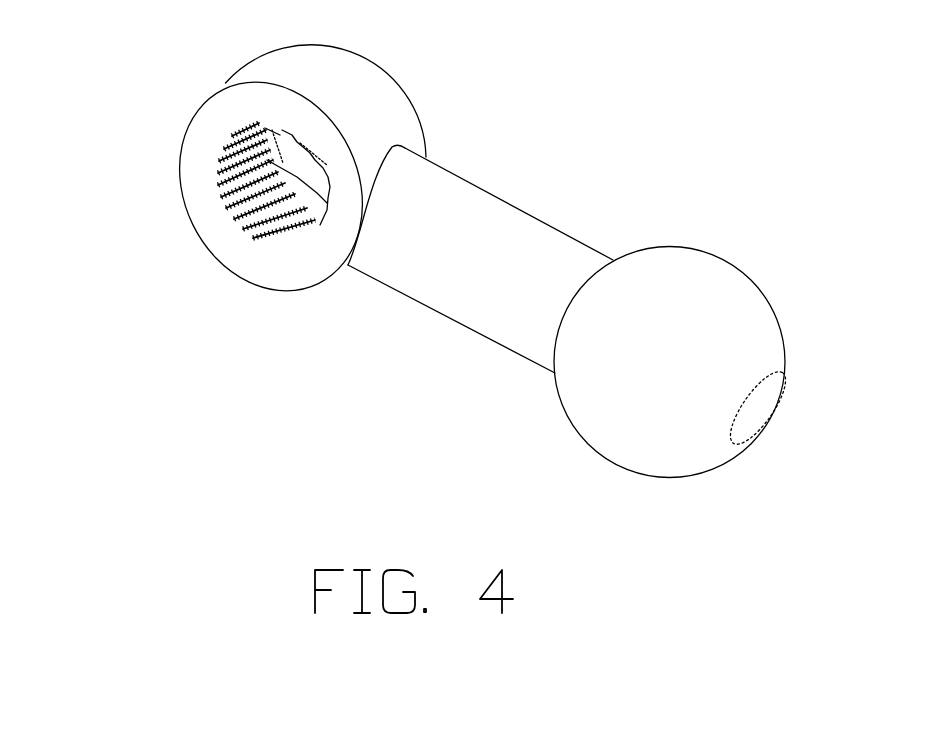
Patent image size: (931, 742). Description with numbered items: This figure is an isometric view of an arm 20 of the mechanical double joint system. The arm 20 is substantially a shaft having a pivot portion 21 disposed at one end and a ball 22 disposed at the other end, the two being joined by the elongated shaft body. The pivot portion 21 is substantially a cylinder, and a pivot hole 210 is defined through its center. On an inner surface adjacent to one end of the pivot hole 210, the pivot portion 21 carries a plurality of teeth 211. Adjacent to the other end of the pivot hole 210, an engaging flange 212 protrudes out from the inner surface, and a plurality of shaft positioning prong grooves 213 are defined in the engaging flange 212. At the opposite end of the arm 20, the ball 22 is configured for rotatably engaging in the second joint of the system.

The arm 20 is at (468, 205).
The pivot portion 21 is at (260, 263).
The ball 22 is at (688, 280).
The pivot hole 210 is at (215, 173).
The teeth 211 is at (245, 226).
The engaging flange 212 is at (325, 205).
The shaft positioning prong grooves 213 is at (282, 130).